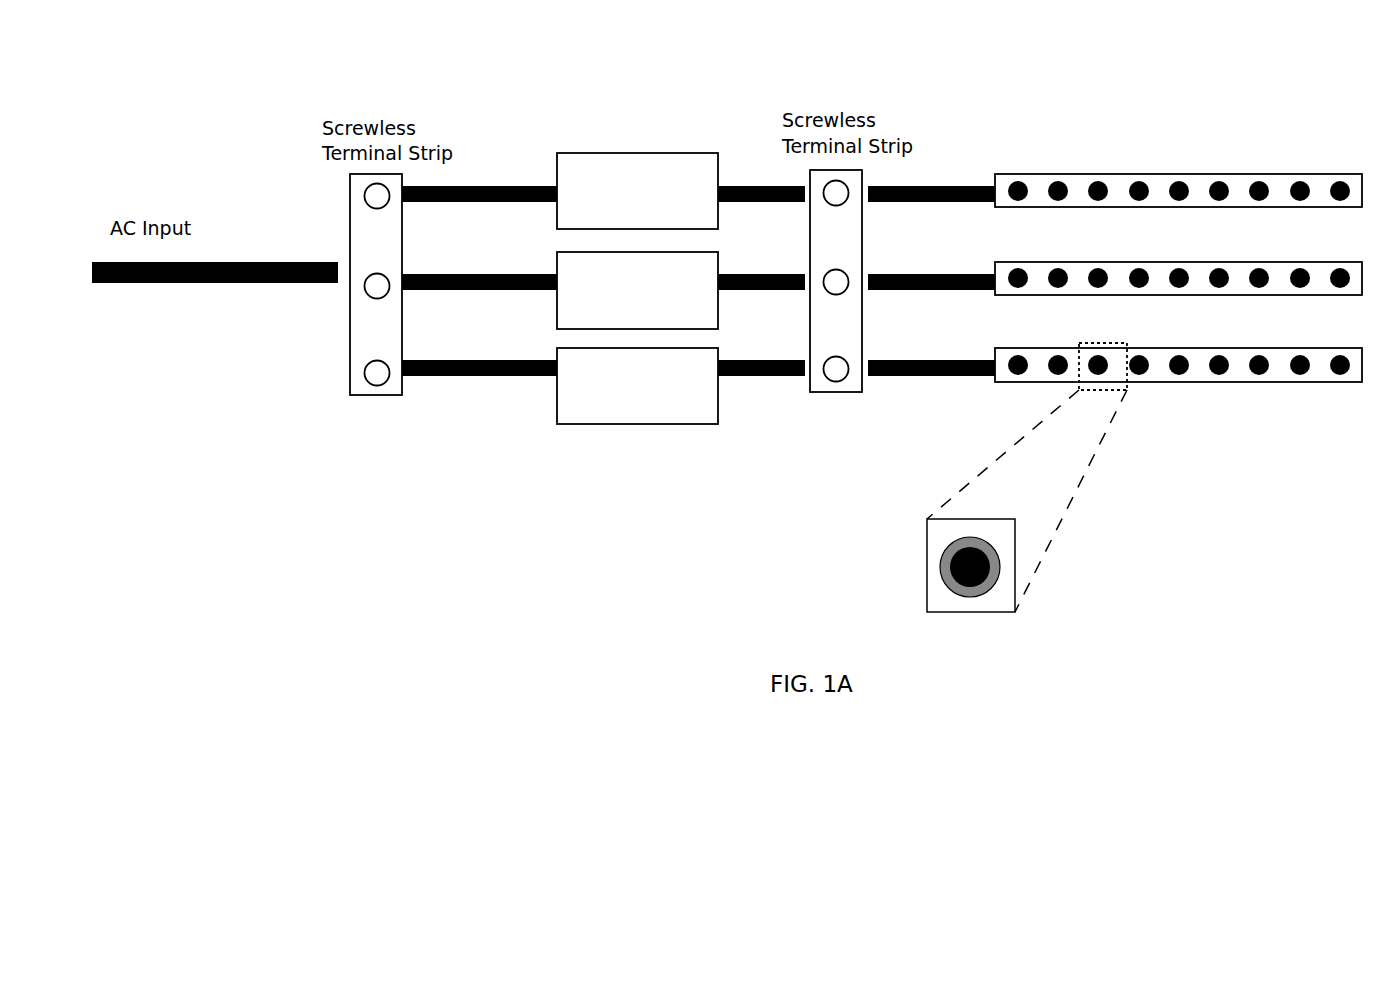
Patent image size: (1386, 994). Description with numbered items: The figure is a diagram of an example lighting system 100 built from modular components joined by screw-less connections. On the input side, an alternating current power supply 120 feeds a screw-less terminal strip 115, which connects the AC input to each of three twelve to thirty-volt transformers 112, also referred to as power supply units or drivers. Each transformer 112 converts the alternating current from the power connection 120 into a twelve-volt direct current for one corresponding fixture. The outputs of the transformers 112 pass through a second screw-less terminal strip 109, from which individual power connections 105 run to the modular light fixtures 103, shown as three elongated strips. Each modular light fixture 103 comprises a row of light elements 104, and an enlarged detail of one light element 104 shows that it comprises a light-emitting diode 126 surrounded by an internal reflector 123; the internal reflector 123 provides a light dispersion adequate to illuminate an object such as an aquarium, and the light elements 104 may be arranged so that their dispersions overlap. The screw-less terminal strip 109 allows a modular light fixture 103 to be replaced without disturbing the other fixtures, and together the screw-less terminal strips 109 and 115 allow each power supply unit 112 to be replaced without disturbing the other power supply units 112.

The lighting system 100 is at (818, 60).
The modular light fixture 103 is at (1308, 174).
The light element 104 is at (1139, 187).
The power connection 105 is at (953, 202).
The screw-less terminal strip 109 is at (838, 392).
The 12 to 30-volt transformer 112 is at (607, 152).
The screw-less terminal strip 115 is at (368, 396).
The alternating current power supply 120 is at (214, 284).
The internal reflector 123 is at (997, 562).
The light-emitting diode 126 is at (992, 572).